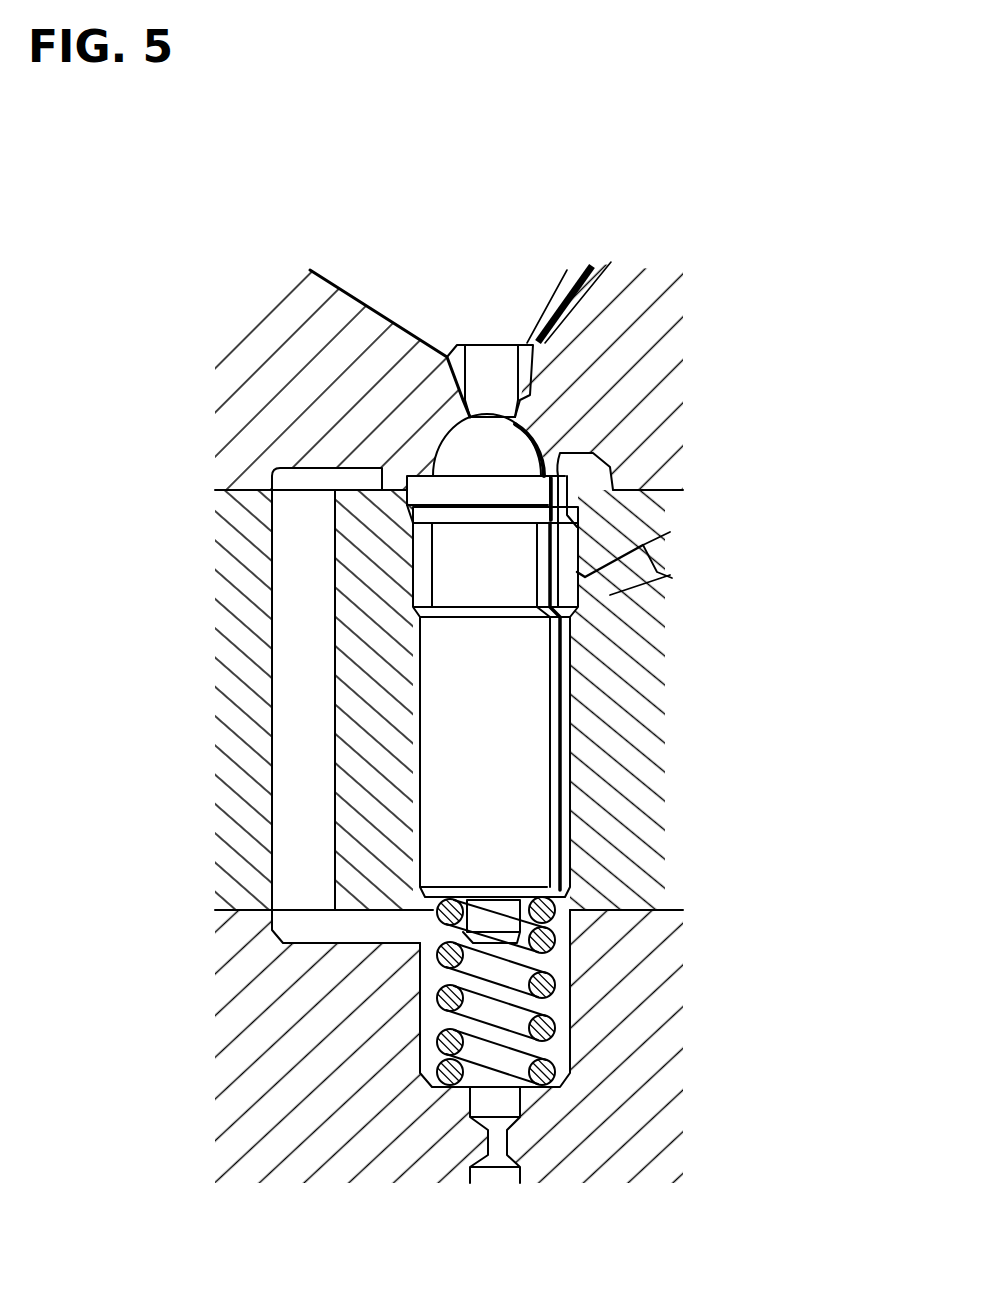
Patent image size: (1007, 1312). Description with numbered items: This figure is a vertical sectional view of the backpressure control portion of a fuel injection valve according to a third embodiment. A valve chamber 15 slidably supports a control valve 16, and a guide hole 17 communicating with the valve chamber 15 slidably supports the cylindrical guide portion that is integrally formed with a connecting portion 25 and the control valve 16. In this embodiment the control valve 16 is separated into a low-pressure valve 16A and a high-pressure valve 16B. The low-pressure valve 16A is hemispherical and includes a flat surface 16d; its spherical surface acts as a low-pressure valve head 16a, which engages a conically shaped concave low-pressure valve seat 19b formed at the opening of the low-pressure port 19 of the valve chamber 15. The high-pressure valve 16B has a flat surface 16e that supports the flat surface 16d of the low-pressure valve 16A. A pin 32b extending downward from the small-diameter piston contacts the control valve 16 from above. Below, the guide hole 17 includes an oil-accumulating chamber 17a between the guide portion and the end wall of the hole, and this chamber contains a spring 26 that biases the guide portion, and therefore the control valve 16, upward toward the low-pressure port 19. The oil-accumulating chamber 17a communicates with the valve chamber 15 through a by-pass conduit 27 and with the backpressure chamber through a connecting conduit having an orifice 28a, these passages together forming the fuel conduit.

The valve chamber 15 is at (393, 470).
The control valve 16 is at (625, 448).
The low-pressure valve 16A is at (560, 443).
The high-pressure valve 16B is at (550, 490).
The low-pressure valve head 16a is at (540, 413).
The flat surface 16d is at (437, 490).
The flat surface 16e is at (494, 458).
The guide hole 17 is at (434, 799).
The oil-accumulating chamber 17a is at (563, 1003).
The low-pressure port 19 is at (527, 358).
The low-pressure valve seat 19b is at (442, 445).
The connecting portion 25 is at (527, 588).
The spring 26 is at (557, 1030).
The by-pass conduit 27 is at (287, 763).
The orifice 28a is at (500, 1143).
The pin 32b is at (510, 377).